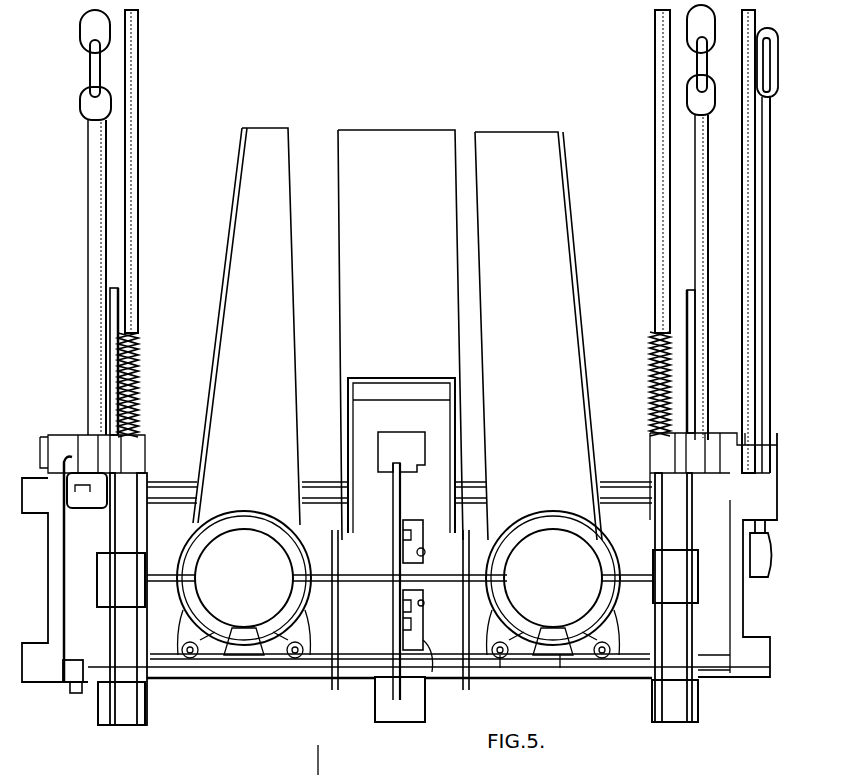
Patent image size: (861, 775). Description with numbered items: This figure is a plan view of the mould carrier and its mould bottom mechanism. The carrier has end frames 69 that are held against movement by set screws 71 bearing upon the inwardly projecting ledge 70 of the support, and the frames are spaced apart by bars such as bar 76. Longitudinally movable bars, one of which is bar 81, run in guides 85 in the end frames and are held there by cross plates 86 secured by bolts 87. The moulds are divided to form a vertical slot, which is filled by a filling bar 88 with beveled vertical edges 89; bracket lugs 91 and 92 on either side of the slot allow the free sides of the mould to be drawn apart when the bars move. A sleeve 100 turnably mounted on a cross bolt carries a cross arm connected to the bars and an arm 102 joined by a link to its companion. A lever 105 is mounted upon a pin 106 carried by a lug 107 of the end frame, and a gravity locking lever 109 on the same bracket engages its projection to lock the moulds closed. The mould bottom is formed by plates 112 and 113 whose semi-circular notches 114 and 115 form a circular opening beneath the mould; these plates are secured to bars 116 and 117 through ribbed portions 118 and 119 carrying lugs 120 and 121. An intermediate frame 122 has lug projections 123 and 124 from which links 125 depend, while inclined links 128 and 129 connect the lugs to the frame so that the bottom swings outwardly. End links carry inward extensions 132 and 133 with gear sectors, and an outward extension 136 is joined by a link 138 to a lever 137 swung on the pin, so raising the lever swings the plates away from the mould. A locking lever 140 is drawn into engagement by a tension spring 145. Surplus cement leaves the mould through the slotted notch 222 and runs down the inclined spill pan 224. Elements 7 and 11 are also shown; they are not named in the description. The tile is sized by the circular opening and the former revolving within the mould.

The ring 7 is at (571, 512).
The frame 11 is at (317, 760).
The end frame 69 is at (50, 583).
The inwardly projecting ledge 70 is at (767, 679).
The set screw 71 is at (755, 657).
The bar 76 is at (173, 493).
The bar 81 is at (622, 672).
The guide 85 is at (537, 512).
The cross plate 86 is at (65, 688).
The bolt 87 is at (77, 694).
The filling bar 88 is at (240, 647).
The beveled vertical edge 89 is at (247, 668).
The bracket lug 91 is at (198, 659).
The bracket lug 92 is at (283, 649).
The sleeve 100 is at (670, 633).
The arm 102 is at (713, 555).
The lever 105 is at (765, 287).
The pin 106 is at (777, 460).
The lug 107 is at (733, 465).
The gravity locking lever 109 is at (747, 395).
The plate 112 is at (434, 620).
The plate 113 is at (432, 544).
The semi-circular notch 114 is at (520, 612).
The semi-circular notch 115 is at (538, 528).
The bar 116 is at (575, 658).
The bar 117 is at (615, 500).
The ribbed portion 118 is at (433, 674).
The ribbed portion 119 is at (415, 515).
The lug 120 is at (423, 606).
The lug 121 is at (415, 552).
The intermediate frame 122 is at (396, 625).
The lug projection 123 is at (377, 713).
The lug projection 124 is at (393, 438).
The link 125 is at (408, 448).
The link 128 is at (407, 605).
The link 129 is at (407, 533).
The inward extension 132 is at (110, 628).
The inward extension 133 is at (105, 519).
The outward extension 136 is at (118, 298).
The lever 137 is at (95, 230).
The link 138 is at (105, 323).
The locking lever 140 is at (139, 112).
The tension spring 145 is at (139, 366).
The slotted notch 222 is at (233, 513).
The inclined spill pan 224 is at (400, 410).